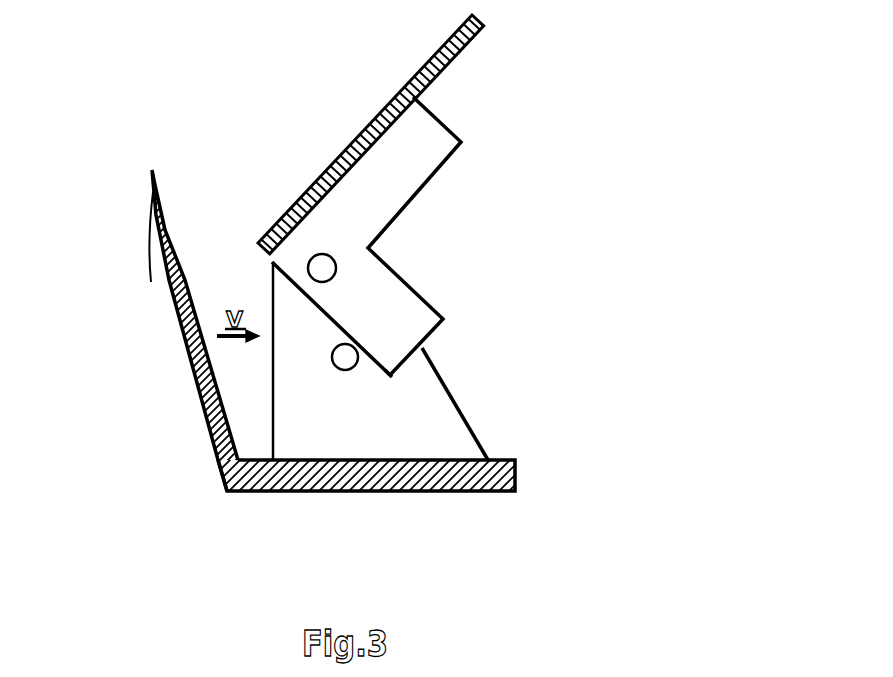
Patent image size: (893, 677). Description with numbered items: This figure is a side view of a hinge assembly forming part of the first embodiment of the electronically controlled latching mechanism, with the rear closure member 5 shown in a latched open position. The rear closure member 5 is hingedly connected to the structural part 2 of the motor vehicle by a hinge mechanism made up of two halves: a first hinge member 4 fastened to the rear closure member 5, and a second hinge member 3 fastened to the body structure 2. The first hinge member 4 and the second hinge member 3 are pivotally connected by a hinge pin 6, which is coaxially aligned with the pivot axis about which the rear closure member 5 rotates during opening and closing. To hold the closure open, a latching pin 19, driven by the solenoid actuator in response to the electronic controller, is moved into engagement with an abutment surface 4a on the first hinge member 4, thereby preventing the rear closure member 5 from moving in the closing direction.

The structural part 2 is at (198, 402).
The second hinge member 3 is at (468, 420).
The first hinge member 4 is at (440, 173).
The abutment surface 4a is at (376, 358).
The rear closure member 5 is at (433, 57).
The hinge pin 6 is at (336, 266).
The latching pin 19 is at (338, 369).